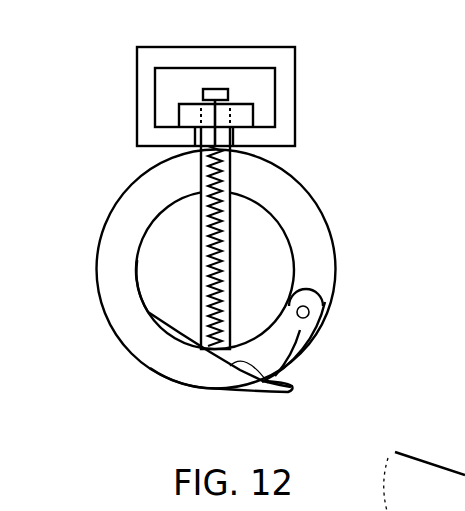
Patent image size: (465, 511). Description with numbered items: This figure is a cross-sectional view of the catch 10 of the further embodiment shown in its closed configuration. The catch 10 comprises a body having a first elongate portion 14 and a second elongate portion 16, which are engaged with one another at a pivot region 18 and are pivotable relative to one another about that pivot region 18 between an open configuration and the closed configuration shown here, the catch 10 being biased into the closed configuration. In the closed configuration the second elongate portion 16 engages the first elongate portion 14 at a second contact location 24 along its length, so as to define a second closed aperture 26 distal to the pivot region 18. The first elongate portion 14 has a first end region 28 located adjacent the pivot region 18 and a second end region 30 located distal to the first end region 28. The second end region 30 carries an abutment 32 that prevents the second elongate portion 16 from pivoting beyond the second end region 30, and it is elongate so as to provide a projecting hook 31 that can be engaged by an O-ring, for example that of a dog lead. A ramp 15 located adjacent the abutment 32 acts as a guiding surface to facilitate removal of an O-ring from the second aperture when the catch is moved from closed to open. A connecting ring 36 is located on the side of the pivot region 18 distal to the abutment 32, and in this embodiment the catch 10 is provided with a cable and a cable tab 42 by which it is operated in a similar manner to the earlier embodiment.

The catch 10 is at (186, 269).
The first elongate portion 14 is at (122, 238).
The ramp 15 is at (177, 327).
The second elongate portion 16 is at (282, 342).
The pivot region 18 is at (312, 313).
The second contact location 24 is at (271, 383).
The second closed aperture 26 is at (165, 290).
The first end region 28 is at (320, 285).
The second end region 30 is at (207, 370).
The projecting hook 31 is at (286, 372).
The abutment 32 is at (240, 370).
The connecting ring 36 is at (295, 65).
The cable tab 42 is at (215, 88).